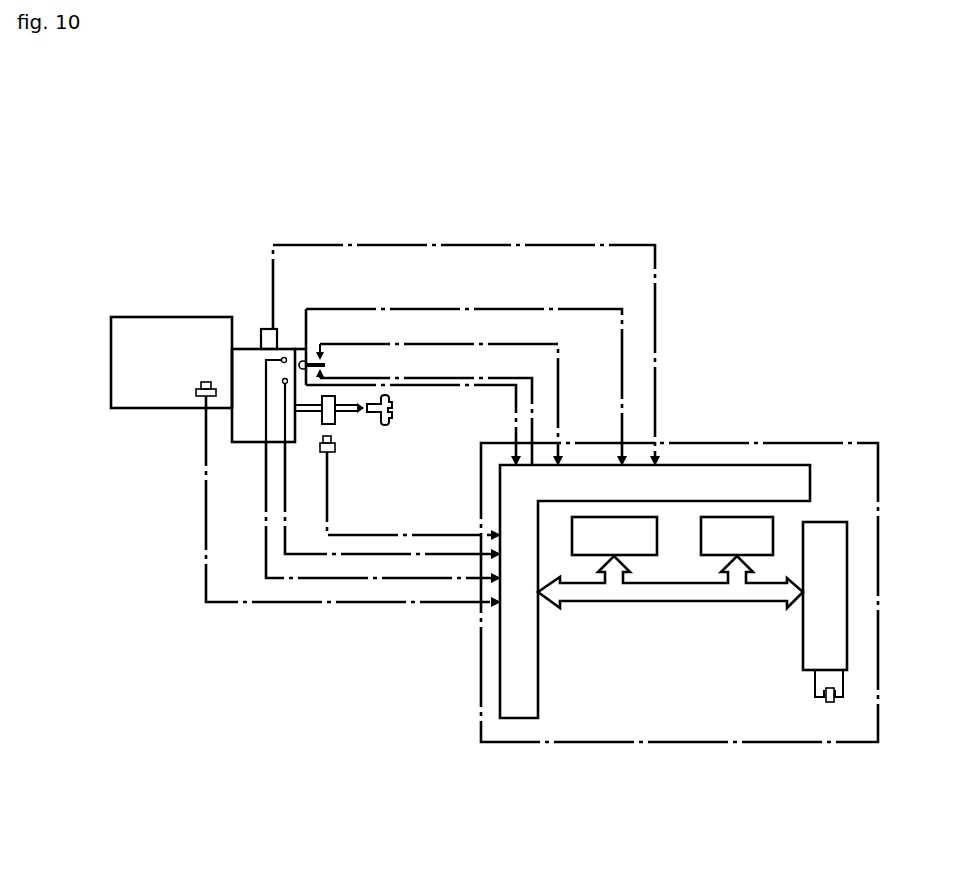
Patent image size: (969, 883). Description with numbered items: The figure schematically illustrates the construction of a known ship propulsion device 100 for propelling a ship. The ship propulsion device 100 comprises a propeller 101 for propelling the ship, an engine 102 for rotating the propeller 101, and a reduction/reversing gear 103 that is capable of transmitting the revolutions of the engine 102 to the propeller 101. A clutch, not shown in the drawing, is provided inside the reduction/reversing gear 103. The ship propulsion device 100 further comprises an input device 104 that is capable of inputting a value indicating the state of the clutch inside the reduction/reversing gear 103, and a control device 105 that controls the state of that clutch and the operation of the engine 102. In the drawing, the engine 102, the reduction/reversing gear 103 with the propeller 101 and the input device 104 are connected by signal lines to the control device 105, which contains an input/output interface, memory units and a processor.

The ship propulsion device 100 is at (745, 358).
The propeller 101 is at (394, 419).
The engine 102 is at (162, 317).
The reduction/reversing gear 103 is at (247, 442).
The input device 104 is at (327, 367).
The control device 105 is at (820, 443).